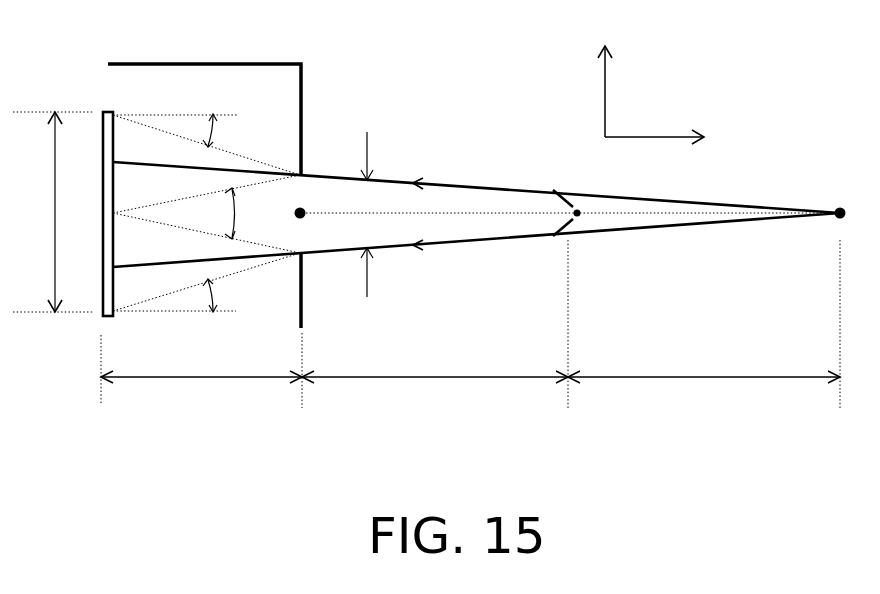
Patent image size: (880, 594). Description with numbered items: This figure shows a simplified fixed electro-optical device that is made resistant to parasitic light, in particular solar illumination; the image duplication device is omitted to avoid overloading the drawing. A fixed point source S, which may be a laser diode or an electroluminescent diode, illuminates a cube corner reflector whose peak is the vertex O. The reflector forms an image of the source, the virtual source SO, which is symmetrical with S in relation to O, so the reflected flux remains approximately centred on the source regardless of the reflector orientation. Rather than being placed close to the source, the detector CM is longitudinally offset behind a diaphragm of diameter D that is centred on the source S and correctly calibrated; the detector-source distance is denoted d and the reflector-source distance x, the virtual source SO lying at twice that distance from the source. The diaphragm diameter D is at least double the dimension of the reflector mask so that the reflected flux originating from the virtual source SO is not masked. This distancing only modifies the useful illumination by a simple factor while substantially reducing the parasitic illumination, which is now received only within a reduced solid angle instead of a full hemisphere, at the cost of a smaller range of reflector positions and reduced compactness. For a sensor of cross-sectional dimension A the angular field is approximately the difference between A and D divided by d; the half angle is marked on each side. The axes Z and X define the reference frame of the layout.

The detector CM is at (101, 320).
The point source S is at (303, 220).
The vertex of the reflector O is at (580, 213).
The virtual source SO is at (496, 214).
The diaphragm diameter D is at (367, 132).
The cross-sectional dimension of the sensor A is at (53, 212).
The detector-source distance d is at (207, 371).
The reflector-source distance x is at (571, 324).
The Z axis Z is at (605, 79).
The X axis X is at (664, 138).